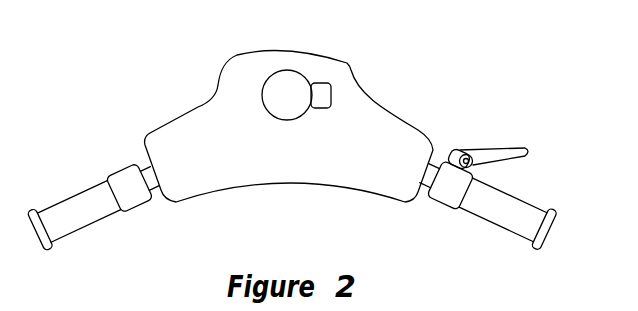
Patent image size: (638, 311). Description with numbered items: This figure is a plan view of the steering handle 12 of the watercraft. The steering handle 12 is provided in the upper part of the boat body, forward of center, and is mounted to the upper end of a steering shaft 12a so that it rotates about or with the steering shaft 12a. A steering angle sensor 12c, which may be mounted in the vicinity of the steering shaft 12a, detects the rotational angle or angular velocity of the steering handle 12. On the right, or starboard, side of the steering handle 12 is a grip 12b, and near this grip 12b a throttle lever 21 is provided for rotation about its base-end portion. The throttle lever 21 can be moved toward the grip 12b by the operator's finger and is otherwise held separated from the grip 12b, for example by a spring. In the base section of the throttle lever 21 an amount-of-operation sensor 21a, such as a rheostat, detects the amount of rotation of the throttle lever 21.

The steering handle 12 is at (407, 108).
The steering shaft 12a is at (288, 70).
The grip 12b is at (528, 211).
The steering angle sensor 12c is at (332, 88).
The throttle lever 21 is at (530, 152).
The amount-of-operation sensor 21a is at (459, 151).